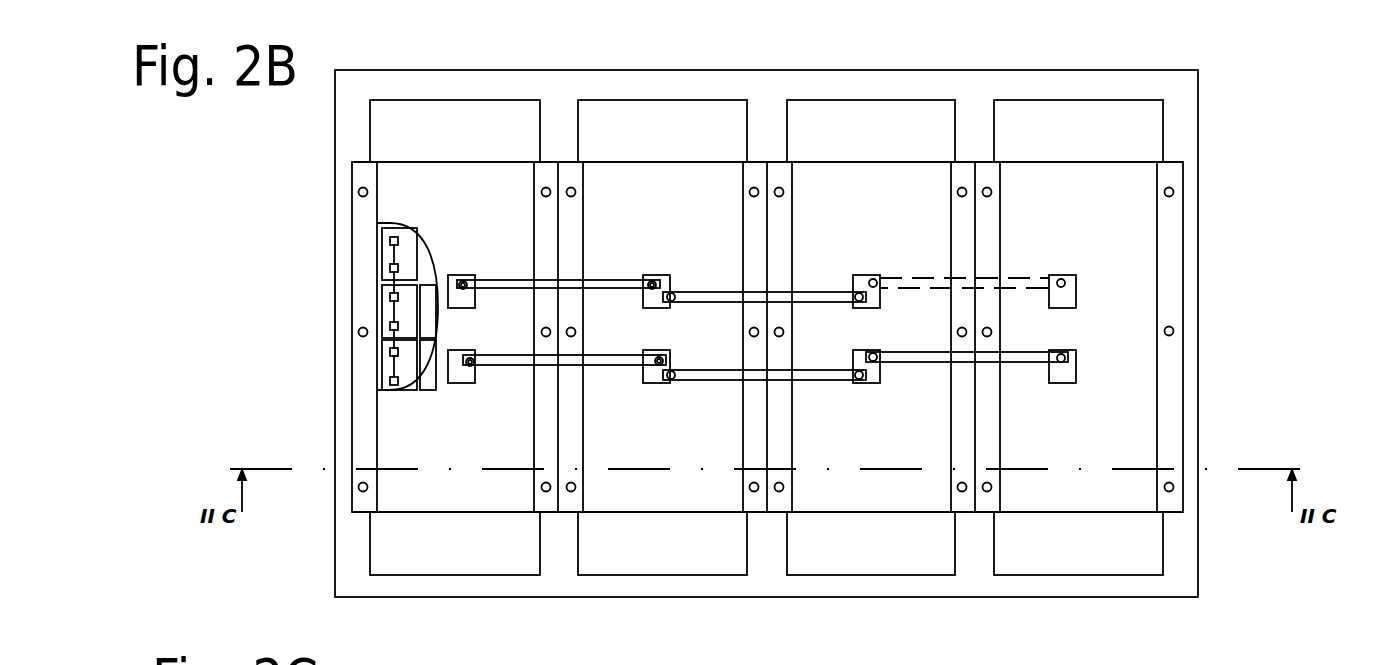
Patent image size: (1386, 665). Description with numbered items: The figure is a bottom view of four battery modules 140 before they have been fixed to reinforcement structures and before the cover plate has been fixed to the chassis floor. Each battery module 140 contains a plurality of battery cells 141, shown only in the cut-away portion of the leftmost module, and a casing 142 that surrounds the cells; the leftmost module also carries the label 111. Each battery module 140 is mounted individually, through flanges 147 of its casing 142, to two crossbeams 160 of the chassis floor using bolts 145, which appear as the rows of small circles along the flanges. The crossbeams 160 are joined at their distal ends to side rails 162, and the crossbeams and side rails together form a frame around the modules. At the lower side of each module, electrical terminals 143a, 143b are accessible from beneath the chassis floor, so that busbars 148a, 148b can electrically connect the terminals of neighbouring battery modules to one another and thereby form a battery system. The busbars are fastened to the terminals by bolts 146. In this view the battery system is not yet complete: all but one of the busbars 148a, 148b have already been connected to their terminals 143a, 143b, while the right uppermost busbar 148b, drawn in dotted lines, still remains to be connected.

The battery pack 111 is at (473, 146).
The battery module 140 is at (447, 495).
The battery cells 141 is at (395, 309).
The casing 142 is at (412, 162).
The electrical terminal 143a is at (452, 380).
The electrical terminal 143b is at (447, 272).
The bolt 145 is at (358, 192).
The bolt 146 is at (465, 289).
The flange 147 is at (358, 332).
The busbar 148a is at (506, 365).
The busbar 148b is at (500, 290).
The crossbeam 160 is at (350, 133).
The side rail 162 is at (1117, 80).